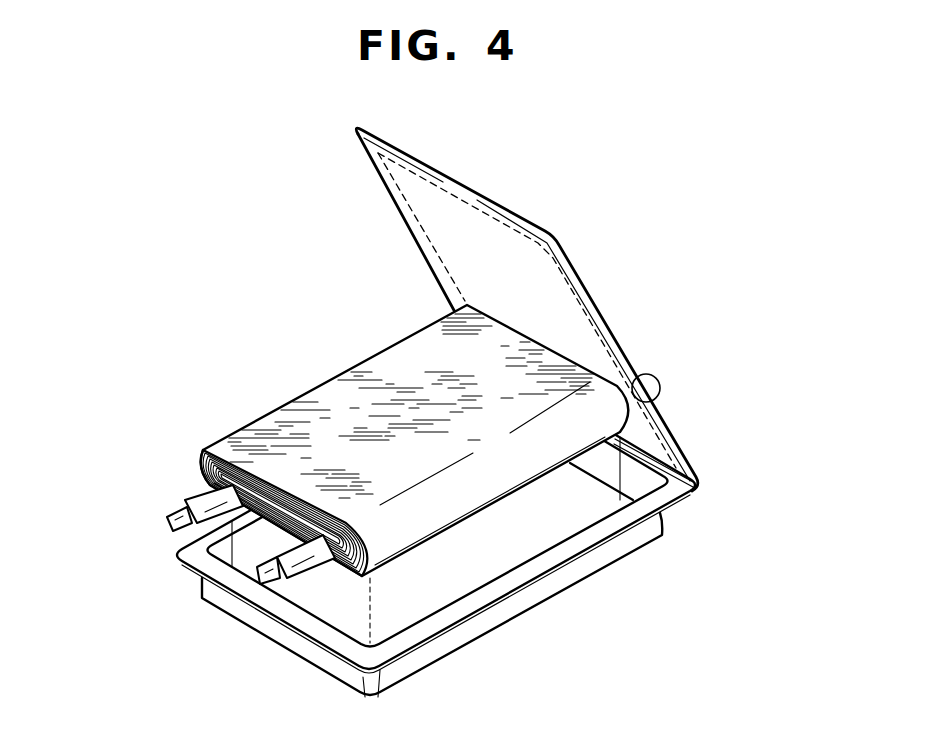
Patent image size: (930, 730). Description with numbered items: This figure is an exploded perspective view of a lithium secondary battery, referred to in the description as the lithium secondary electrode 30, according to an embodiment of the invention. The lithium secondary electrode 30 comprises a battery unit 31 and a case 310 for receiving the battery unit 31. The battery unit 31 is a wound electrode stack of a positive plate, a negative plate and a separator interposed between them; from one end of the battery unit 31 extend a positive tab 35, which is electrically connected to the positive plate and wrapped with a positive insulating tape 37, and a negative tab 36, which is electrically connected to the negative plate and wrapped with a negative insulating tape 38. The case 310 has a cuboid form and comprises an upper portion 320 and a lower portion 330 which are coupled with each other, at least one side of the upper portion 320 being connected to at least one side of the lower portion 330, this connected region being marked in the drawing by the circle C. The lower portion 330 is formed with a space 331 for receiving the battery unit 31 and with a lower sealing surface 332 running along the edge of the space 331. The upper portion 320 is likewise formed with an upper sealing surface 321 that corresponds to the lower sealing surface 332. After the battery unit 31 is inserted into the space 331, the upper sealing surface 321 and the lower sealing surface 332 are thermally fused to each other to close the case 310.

The lithium secondary electrode 30 is at (488, 414).
The case 310 is at (446, 536).
The upper portion 320 is at (556, 309).
The upper sealing surface 321 is at (405, 206).
The lower portion 330 is at (455, 640).
The space 331 is at (583, 512).
The lower sealing surface 332 is at (300, 625).
The connecting (hinge) portion C is at (661, 383).
The battery unit 31 is at (337, 380).
The positive tab 35 is at (190, 522).
The negative tab 36 is at (257, 566).
The positive insulating tape 37 is at (166, 522).
The negative insulating tape 38 is at (303, 563).